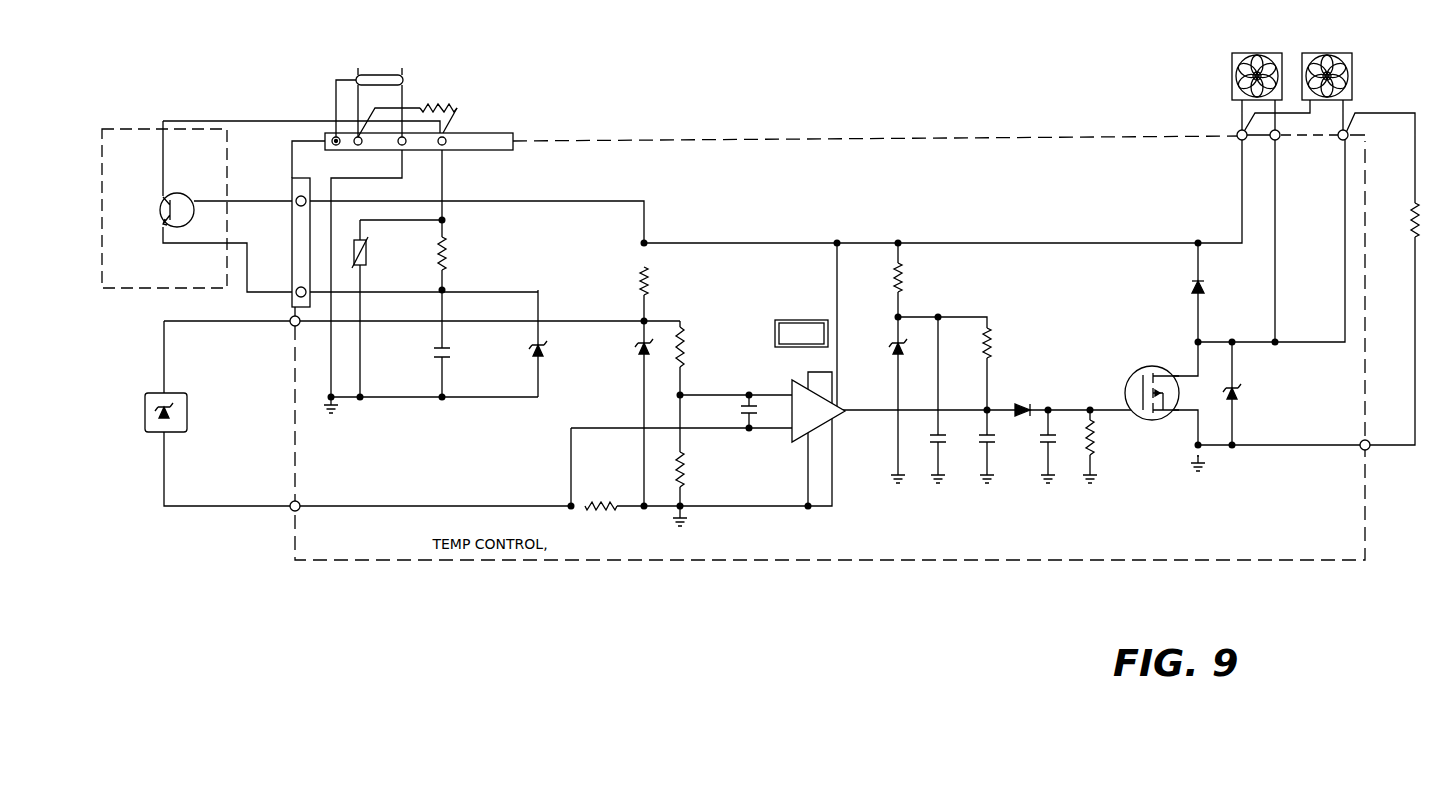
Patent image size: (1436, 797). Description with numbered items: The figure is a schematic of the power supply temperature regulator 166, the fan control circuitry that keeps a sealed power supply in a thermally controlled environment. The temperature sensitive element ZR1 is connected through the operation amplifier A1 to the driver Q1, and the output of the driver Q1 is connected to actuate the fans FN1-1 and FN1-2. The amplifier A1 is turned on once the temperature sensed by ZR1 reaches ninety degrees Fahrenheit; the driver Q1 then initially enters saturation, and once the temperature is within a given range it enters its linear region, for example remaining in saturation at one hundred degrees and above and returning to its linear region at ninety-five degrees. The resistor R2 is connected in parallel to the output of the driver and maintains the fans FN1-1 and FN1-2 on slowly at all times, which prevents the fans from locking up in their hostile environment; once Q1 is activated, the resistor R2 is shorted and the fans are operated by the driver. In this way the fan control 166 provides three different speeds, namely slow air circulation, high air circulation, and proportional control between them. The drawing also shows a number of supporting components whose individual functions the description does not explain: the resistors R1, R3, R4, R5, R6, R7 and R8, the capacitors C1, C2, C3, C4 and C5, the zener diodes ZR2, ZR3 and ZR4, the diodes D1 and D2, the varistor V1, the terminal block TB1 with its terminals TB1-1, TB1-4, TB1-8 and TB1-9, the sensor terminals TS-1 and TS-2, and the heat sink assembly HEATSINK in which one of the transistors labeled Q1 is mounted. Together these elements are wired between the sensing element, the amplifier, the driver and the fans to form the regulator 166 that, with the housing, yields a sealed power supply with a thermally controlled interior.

The power supply temperature regulator 166 is at (850, 138).
The driver Q1 is at (669, 311).
The resistor R1 is at (509, 181).
The resistor R2 is at (1047, 285).
The resistor R3 is at (698, 467).
The resistor R4 is at (601, 488).
The resistor R5 is at (913, 277).
The resistor R6 is at (461, 253).
The resistor R7 is at (1105, 441).
The resistor R8 is at (1003, 343).
The capacitor C1 is at (736, 413).
The capacitor C2 is at (428, 352).
The capacitor C3 is at (926, 447).
The capacitor C4 is at (974, 447).
The capacitor C5 is at (1035, 447).
The temperature sensitive element ZR1 is at (368, 388).
The zener diode ZR2 is at (626, 361).
The zener diode ZR3 is at (877, 359).
The zener diode ZR4 is at (1252, 406).
The diode D1 is at (1025, 399).
The diode D2 is at (1185, 279).
The operation amplifier A1 is at (816, 381).
The varistor V1 is at (397, 308).
The terminal block TB1 is at (419, 142).
The terminal block terminals 1, 2, 3 TB1-1 is at (1266, 126).
The terminal block terminal 4 TB1-4 is at (1335, 455).
The terminal block terminal 8 TB1-8 is at (273, 242).
The terminal block terminal 9 TB1-9 is at (271, 300).
The temperature sensor terminal 1 TS-1 is at (266, 329).
The temperature sensor terminal 2 TS-2 is at (271, 517).
The fan FN1-1 is at (1225, 76).
The fan FN1-2 is at (1360, 76).
The heat sink assembly HEATSINK is at (164, 208).